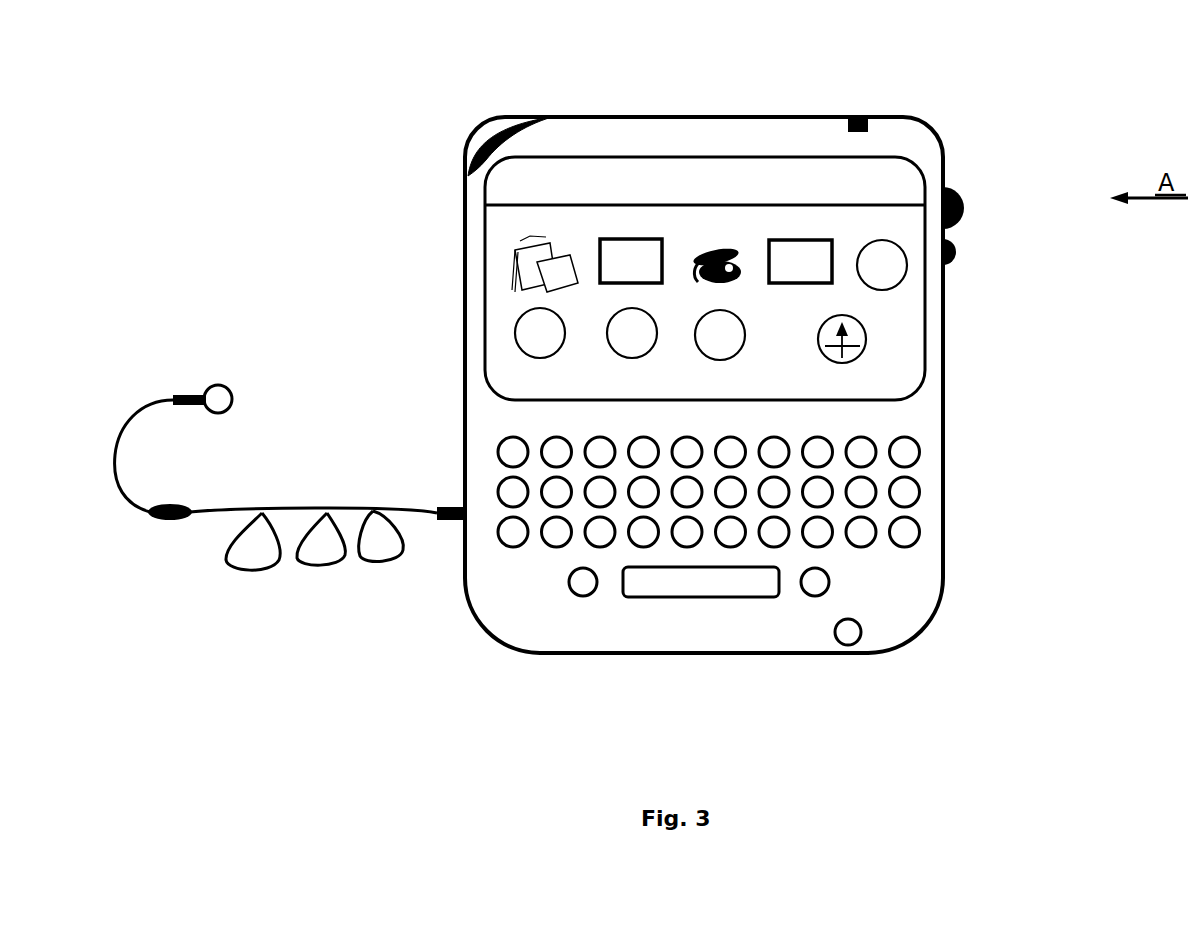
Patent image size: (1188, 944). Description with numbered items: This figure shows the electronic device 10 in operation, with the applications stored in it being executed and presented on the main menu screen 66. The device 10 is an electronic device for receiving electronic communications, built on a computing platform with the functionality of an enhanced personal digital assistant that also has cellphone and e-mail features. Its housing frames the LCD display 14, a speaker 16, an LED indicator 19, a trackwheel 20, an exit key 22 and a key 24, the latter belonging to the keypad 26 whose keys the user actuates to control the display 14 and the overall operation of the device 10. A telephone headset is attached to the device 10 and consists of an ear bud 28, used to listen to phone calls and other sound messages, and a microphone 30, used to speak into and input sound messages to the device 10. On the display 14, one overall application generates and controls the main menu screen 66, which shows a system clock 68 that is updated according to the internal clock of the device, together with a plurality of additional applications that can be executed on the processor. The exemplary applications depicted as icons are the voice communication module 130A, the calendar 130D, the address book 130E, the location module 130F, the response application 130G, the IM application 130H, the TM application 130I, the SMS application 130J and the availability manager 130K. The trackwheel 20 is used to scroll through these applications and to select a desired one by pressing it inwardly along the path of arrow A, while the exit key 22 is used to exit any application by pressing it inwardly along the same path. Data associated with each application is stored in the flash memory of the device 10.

The electronic device 10 is at (670, 679).
The LCD display 14 is at (480, 382).
The speaker 16 is at (488, 135).
The LED indicator 19 is at (868, 124).
The trackwheel 20 is at (964, 208).
The exit key 22 is at (956, 253).
The key 24 is at (936, 500).
The keypad 26 is at (715, 606).
The ear bud 28 is at (257, 393).
The microphone 30 is at (205, 500).
The main menu screen 66 is at (704, 233).
The system clock 68 is at (517, 162).
The voice communication module 130A is at (723, 232).
The calendar 130D is at (546, 232).
The address book 130E is at (626, 232).
The location module 130F is at (866, 341).
The response application 130G is at (785, 232).
The IM application 130H is at (540, 358).
The TM application 130I is at (629, 358).
The SMS application 130J is at (721, 360).
The availability manager 130K is at (908, 278).